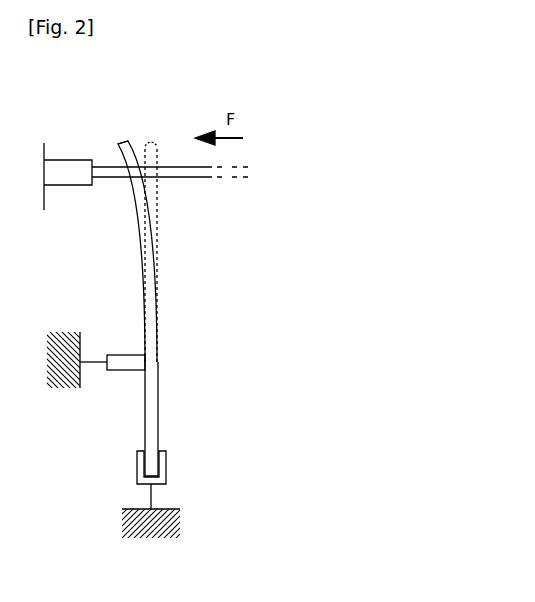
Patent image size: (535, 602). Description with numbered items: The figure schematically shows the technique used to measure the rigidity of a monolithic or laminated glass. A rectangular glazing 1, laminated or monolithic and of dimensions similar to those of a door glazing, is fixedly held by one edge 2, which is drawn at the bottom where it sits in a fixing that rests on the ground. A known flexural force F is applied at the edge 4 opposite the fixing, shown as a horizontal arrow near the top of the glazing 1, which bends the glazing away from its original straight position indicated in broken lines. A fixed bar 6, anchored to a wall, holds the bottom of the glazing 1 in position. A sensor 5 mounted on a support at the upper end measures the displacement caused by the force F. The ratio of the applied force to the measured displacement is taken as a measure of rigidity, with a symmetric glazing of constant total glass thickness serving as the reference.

The rectangular glazing 1 is at (132, 215).
The edge 2 is at (180, 466).
The edge 4 is at (129, 128).
The sensor 5 is at (103, 140).
The fixed bar 6 is at (120, 385).